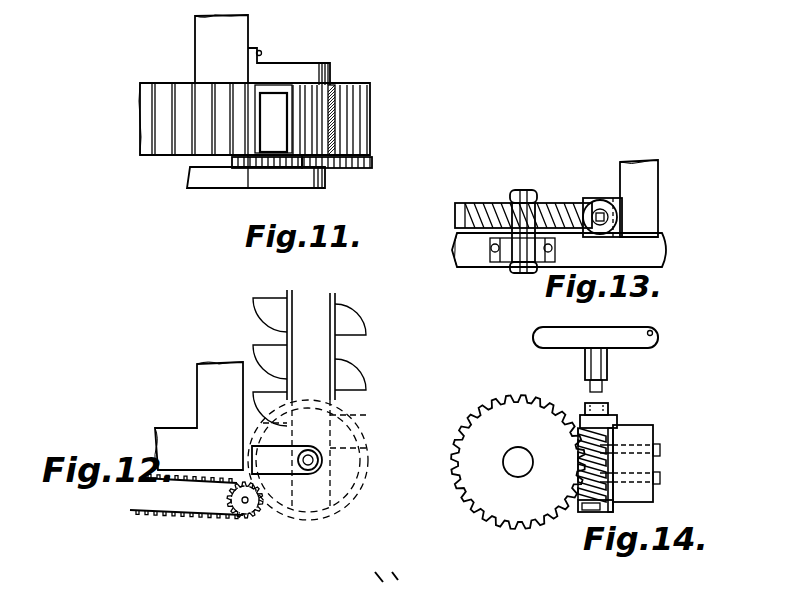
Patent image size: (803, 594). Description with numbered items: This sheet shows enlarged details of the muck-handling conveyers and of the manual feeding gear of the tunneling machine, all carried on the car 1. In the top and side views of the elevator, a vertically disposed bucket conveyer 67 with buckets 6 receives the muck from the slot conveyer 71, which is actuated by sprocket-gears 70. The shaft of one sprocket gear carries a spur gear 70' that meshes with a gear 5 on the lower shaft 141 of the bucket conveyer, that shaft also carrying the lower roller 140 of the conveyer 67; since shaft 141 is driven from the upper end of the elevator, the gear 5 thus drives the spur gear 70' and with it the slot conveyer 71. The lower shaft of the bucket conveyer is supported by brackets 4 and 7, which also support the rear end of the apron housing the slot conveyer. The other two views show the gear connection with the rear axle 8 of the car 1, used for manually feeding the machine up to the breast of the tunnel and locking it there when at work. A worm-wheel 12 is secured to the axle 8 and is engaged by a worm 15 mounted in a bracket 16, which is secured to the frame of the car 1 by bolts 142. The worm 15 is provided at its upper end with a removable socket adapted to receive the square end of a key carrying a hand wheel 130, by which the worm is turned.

In FIG. 11, the car 1 is at (232, 52).
In FIG. 13, the car 1 is at (640, 217).
In FIG. 12, the car 1 is at (203, 395).
In FIG. 14, the car 1 is at (640, 467).
In FIG. 11, the bracket 4 is at (282, 182).
In FIG. 12, the bracket 4 is at (268, 460).
In FIG. 11, the gear 5 is at (372, 163).
In FIG. 12, the gear 5 is at (347, 468).
In FIG. 11, the buckets 6 is at (276, 120).
In FIG. 12, the buckets 6 is at (334, 400).
In FIG. 11, the bracket 7 is at (282, 72).
In FIG. 13, the driven axle 8 is at (537, 190).
In FIG. 14, the driven axle 8 is at (518, 462).
In FIG. 13, the worm-wheel 12 is at (548, 212).
In FIG. 14, the worm-wheel 12 is at (498, 395).
In FIG. 13, the worm 15 is at (610, 213).
In FIG. 14, the worm 15 is at (608, 405).
In FIG. 13, the bracket 16 is at (592, 202).
In FIG. 14, the bracket 16 is at (610, 420).
In FIG. 11, the bucket conveyer 67 is at (333, 133).
In FIG. 12, the bucket conveyer 67 is at (333, 352).
In FIG. 11, the sprocket-gears 70 is at (238, 204).
In FIG. 12, the spur gear 70' is at (229, 533).
In FIG. 11, the slot conveyer 71 is at (190, 145).
In FIG. 12, the slot conveyer 71 is at (205, 518).
In FIG. 14, the hand wheel 130 is at (615, 335).
In FIG. 12, the lower roller 140 is at (327, 465).
In FIG. 12, the shaft 141 is at (320, 458).
In FIG. 14, the bolts 142 is at (658, 452).